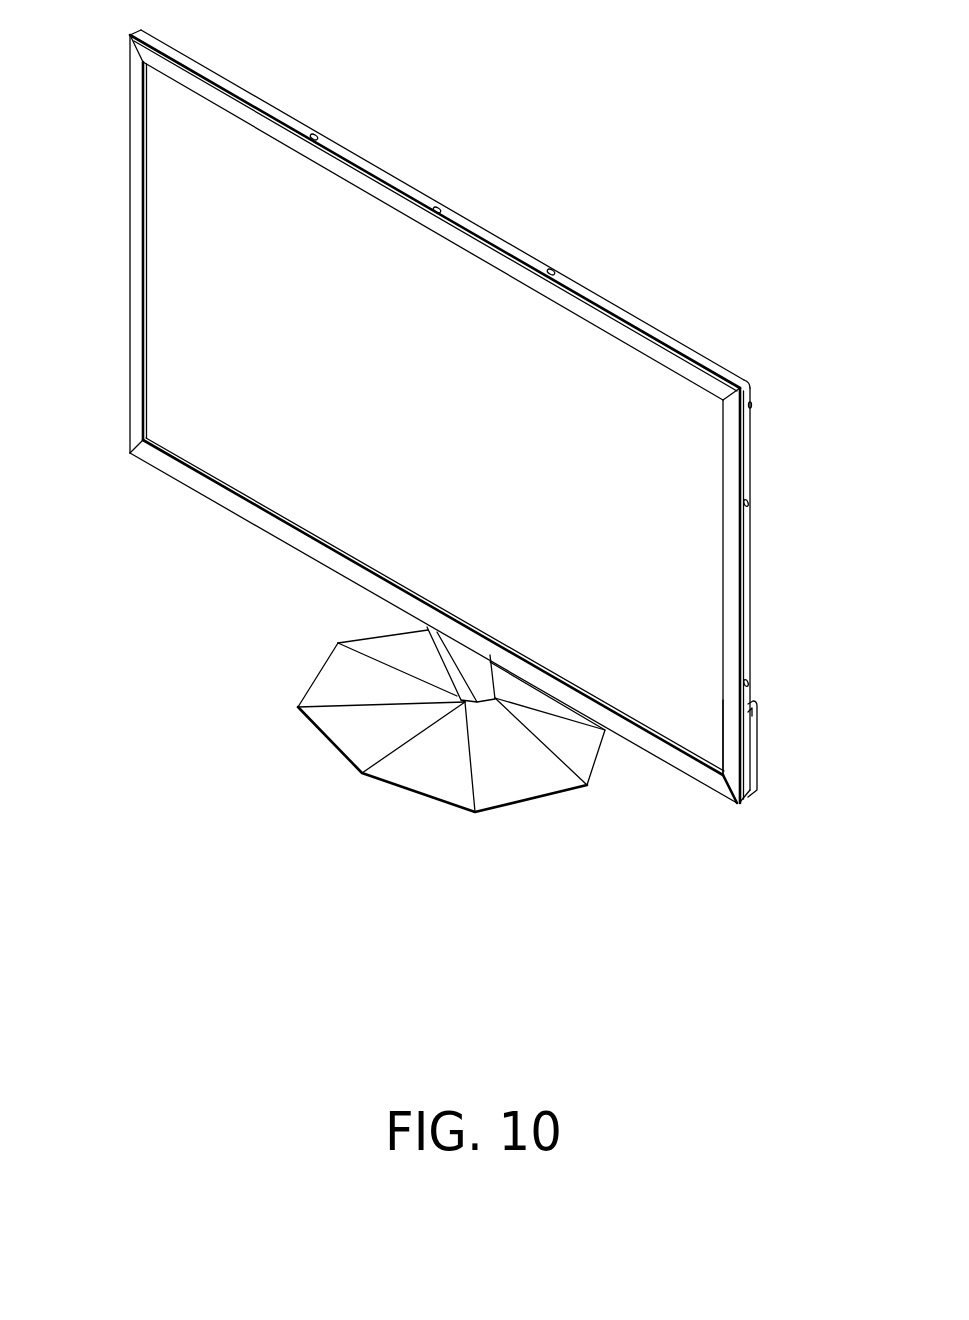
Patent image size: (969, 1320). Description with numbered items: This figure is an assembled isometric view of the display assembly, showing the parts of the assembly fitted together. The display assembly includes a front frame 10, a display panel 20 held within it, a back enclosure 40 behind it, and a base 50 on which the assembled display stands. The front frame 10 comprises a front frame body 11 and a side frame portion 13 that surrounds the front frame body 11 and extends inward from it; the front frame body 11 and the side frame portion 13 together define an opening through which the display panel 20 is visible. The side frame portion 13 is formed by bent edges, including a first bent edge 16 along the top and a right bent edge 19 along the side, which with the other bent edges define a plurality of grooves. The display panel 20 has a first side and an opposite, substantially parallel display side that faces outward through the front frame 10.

The display device 10 is at (207, 507).
The bottom frame portion 11 is at (692, 768).
The side frame portion 13 is at (747, 765).
The top frame portion 16 is at (673, 343).
The side wall 19 is at (745, 583).
The display panel 20 is at (173, 392).
The hook 40 is at (758, 712).
The stand 50 is at (515, 773).